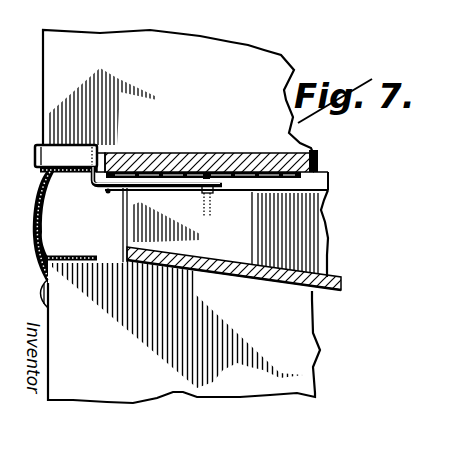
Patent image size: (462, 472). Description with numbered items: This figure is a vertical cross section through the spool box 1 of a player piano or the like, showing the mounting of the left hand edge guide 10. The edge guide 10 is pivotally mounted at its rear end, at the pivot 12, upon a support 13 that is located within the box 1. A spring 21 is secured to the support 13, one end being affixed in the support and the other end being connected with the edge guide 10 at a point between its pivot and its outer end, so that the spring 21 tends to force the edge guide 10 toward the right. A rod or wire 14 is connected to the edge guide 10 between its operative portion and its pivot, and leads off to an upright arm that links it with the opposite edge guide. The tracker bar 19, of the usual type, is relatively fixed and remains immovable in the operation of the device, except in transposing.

The spool box 1 is at (191, 216).
The edge guide 10 is at (36, 166).
The pivot 12 is at (208, 172).
The support 13 is at (271, 188).
The rod or wire 14 is at (108, 194).
The tracker bar 19 is at (41, 214).
The spring 21 is at (161, 156).